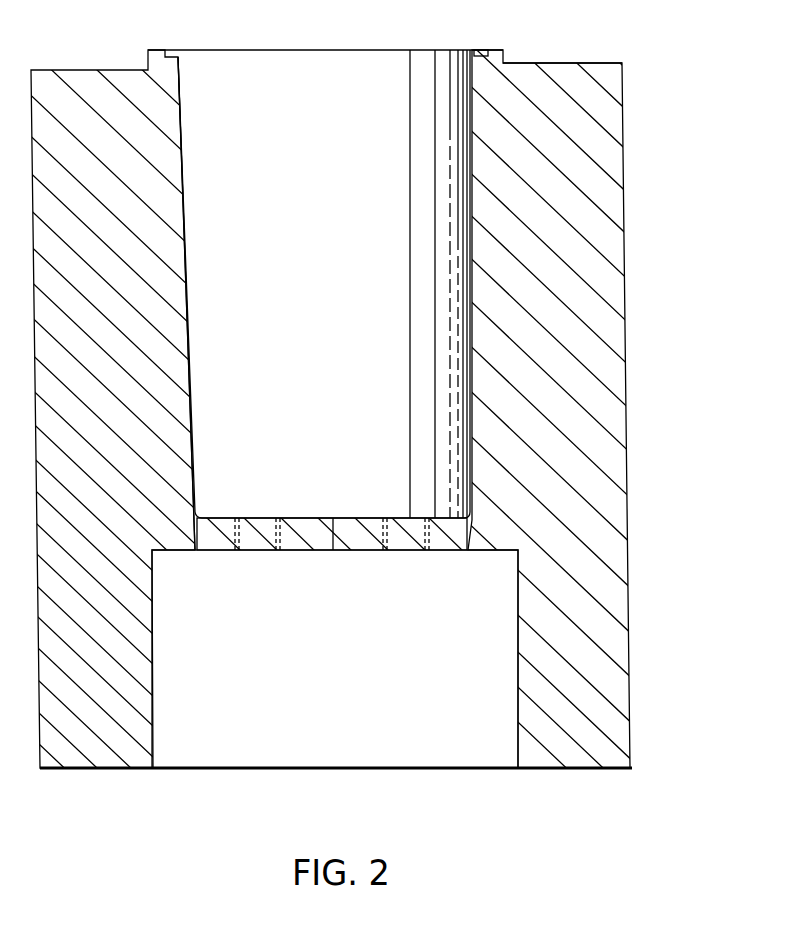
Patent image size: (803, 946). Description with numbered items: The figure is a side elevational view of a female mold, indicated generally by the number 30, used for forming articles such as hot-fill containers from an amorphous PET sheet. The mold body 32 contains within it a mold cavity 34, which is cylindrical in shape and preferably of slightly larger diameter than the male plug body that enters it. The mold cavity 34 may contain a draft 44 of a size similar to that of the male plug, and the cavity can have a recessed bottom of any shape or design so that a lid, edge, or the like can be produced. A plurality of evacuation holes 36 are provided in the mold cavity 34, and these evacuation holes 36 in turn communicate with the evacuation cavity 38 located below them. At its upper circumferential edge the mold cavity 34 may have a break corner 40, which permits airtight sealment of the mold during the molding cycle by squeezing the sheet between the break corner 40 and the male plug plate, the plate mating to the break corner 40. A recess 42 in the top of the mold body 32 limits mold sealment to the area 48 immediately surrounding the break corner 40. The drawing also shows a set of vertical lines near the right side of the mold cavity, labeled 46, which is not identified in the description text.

The female mold 30 is at (668, 319).
The mold body 32 is at (613, 205).
The mold cavity 34 is at (337, 354).
The evacuation holes 36 is at (385, 518).
The evacuation cavity 38 is at (342, 700).
The break corner 40 is at (479, 50).
The recess 42 is at (575, 40).
The draft 44 is at (190, 295).
The liner sleeve 46 is at (470, 444).
The area immediately surrounding the break corner 48 is at (370, 50).